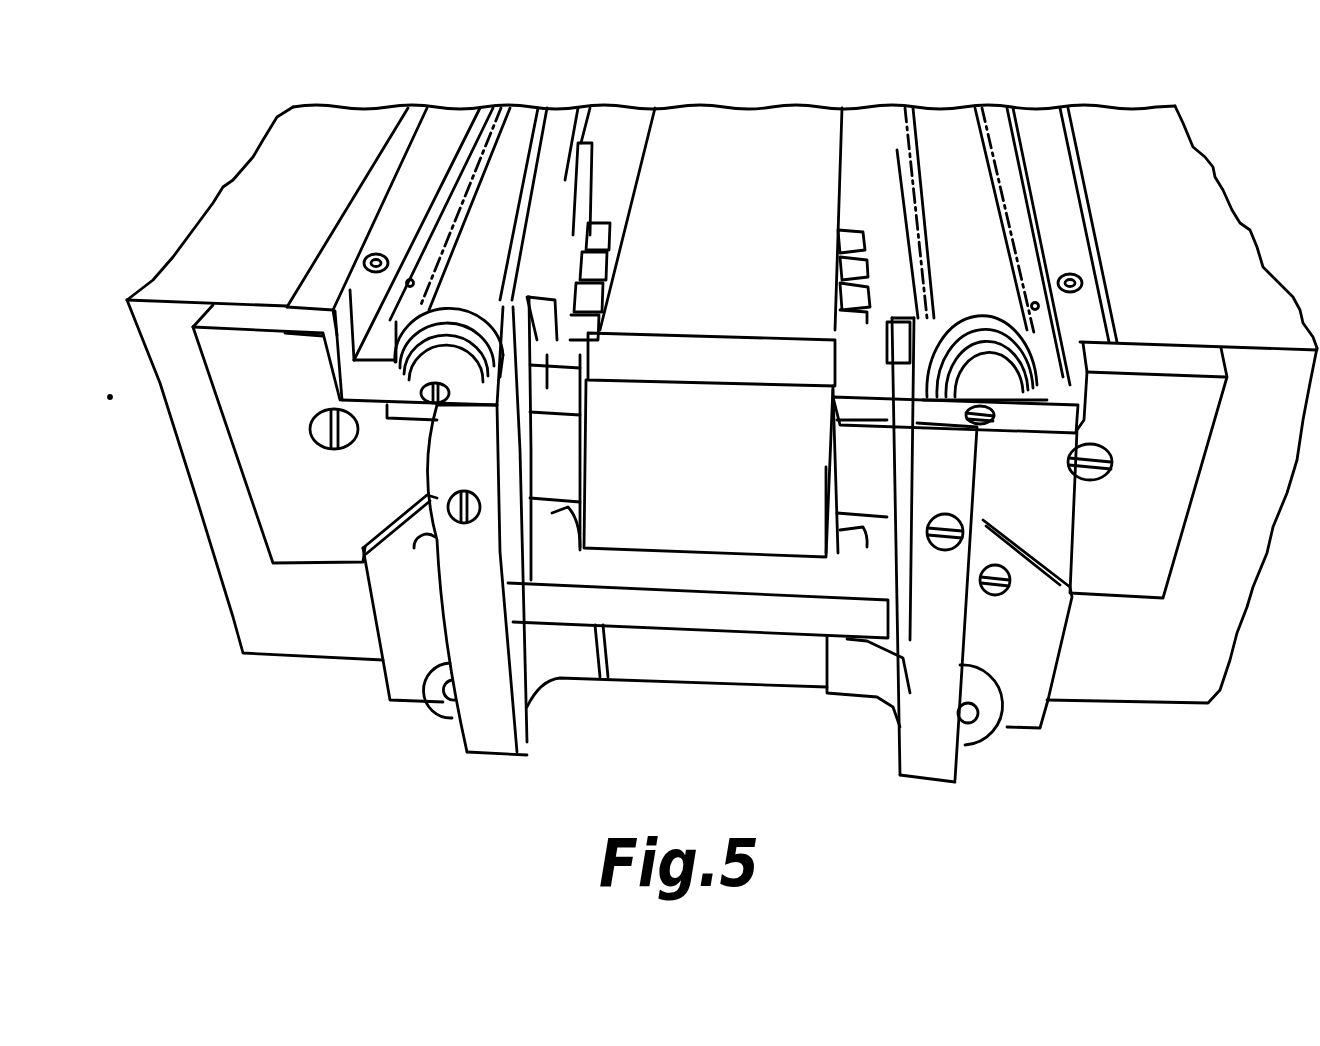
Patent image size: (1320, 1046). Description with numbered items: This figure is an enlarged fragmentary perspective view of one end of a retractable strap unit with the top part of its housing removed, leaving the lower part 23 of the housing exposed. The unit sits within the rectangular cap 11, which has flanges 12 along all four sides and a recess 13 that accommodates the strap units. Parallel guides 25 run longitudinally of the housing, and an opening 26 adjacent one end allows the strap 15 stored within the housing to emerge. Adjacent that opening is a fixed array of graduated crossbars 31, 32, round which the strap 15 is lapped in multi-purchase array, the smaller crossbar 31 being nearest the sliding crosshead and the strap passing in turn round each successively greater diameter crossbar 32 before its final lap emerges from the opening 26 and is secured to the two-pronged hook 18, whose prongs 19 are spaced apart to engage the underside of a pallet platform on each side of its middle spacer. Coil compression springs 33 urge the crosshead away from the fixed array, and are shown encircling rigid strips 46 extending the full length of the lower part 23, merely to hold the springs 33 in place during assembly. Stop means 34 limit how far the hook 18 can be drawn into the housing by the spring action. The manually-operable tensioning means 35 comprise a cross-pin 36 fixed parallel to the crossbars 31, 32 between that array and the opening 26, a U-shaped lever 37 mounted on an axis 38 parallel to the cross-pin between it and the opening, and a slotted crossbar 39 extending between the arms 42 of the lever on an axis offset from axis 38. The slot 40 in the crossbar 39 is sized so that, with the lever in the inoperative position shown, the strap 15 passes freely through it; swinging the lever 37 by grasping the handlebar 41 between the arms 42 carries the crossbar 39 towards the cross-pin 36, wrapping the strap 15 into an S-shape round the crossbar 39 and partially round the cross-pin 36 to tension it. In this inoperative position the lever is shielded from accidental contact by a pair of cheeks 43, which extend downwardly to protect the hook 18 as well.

The rectangular cap 11 is at (257, 240).
The flanges 12 is at (257, 622).
The recess 13 is at (410, 110).
The retractable strap 15 is at (755, 130).
The two-pronged hook 18 is at (598, 570).
The prongs 19 is at (457, 710).
The lower part of housing 23 is at (283, 523).
The parallel guides 25 is at (497, 120).
The opening 26 is at (830, 465).
The smallest crossbar of fixed array 31 is at (607, 210).
The crossbar of fixed array 32 is at (598, 260).
The coil compression springs 33 is at (395, 362).
The stop means 34 is at (400, 678).
The manually-operable tensioning means 35 is at (872, 318).
The cross-pin 36 is at (593, 290).
The U-shaped lever 37 is at (850, 645).
The axis of lever 38 is at (550, 320).
The slotted crossbar 39 is at (723, 345).
The slot 40 is at (727, 392).
The handlebar 41 is at (635, 612).
The arms of lever 42 is at (510, 467).
The cheeks 43 is at (497, 737).
The rigid strips 46 is at (537, 130).